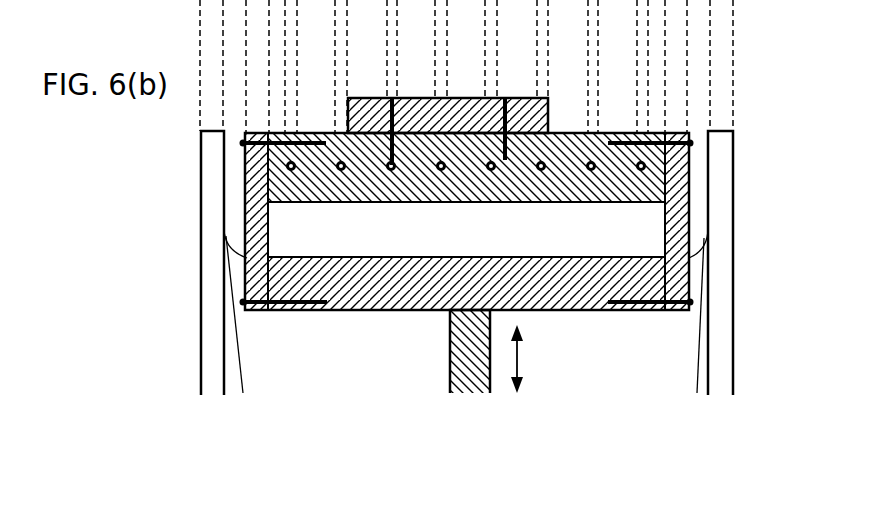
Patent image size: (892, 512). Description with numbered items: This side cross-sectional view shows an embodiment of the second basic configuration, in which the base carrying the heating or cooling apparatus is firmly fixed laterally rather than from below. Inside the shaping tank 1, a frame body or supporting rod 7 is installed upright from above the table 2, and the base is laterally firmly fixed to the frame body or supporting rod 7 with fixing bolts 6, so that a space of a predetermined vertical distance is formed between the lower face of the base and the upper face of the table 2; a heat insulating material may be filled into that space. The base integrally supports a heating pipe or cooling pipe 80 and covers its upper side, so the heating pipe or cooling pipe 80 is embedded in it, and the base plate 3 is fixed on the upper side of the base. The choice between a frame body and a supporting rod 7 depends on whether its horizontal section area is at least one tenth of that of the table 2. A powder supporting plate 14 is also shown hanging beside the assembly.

The shaping tank 1 is at (213, 272).
The table 2 is at (327, 287).
The base plate 3 is at (533, 93).
The fixing bolt 6 is at (257, 143).
The frame body or supporting rod 7 is at (248, 212).
The powder supporting plate 14 is at (466, 326).
The heating pipe or cooling pipe 80 is at (292, 160).